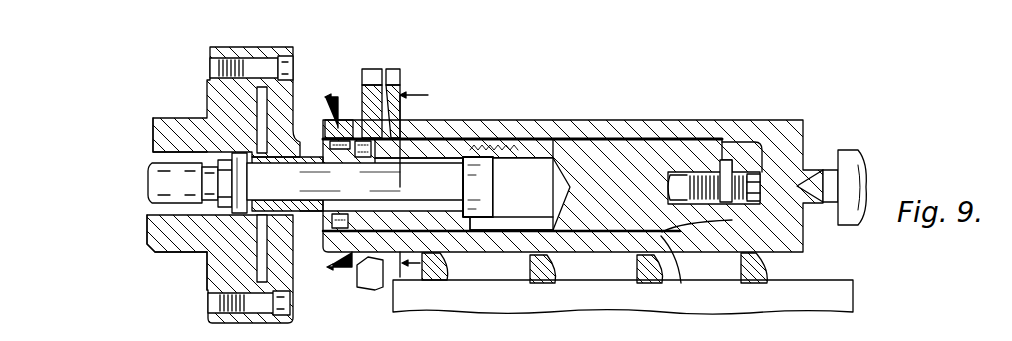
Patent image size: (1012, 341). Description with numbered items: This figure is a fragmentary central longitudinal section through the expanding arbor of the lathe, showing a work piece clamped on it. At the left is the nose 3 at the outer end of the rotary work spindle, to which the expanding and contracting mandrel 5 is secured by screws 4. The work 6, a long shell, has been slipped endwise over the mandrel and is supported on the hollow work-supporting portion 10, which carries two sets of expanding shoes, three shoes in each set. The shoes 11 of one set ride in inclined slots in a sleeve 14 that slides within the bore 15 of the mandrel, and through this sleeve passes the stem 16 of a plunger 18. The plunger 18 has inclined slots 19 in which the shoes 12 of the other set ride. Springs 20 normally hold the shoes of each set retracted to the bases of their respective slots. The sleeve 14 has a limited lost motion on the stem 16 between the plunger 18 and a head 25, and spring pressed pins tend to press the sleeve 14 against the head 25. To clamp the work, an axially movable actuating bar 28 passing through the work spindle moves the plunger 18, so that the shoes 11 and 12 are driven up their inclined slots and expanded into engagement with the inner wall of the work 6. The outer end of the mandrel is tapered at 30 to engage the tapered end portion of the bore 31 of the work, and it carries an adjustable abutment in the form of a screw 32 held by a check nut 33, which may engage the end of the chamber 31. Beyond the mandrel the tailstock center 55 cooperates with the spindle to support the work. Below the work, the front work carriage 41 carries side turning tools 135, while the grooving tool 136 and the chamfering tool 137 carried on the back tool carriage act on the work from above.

The nose 3 is at (180, 118).
The screws 4 is at (294, 51).
The expanding and contracting mandrel 5 is at (299, 122).
The work 6 is at (700, 123).
The hollow work-supporting portion 10 is at (622, 158).
The expanding shoes 11 is at (334, 187).
The expanding shoes 12 is at (472, 255).
The sleeve 14 is at (297, 232).
The bore 15 is at (537, 165).
The stem 16 is at (355, 181).
The plunger 18 is at (480, 120).
The inclined slots 19 is at (447, 187).
The springs 20 is at (334, 136).
The head 25 is at (209, 247).
The actuating bar 28 is at (160, 190).
The tapered end 30 is at (668, 278).
The bore of the work 31 is at (718, 234).
The screw 32 is at (756, 147).
The check nut 33 is at (728, 162).
The front work carriage 41 is at (777, 303).
The tailstock center 55 is at (850, 157).
The side turning tools 135 is at (445, 280).
The grooving tool 136 is at (367, 68).
The chamfering tool 137 is at (394, 68).